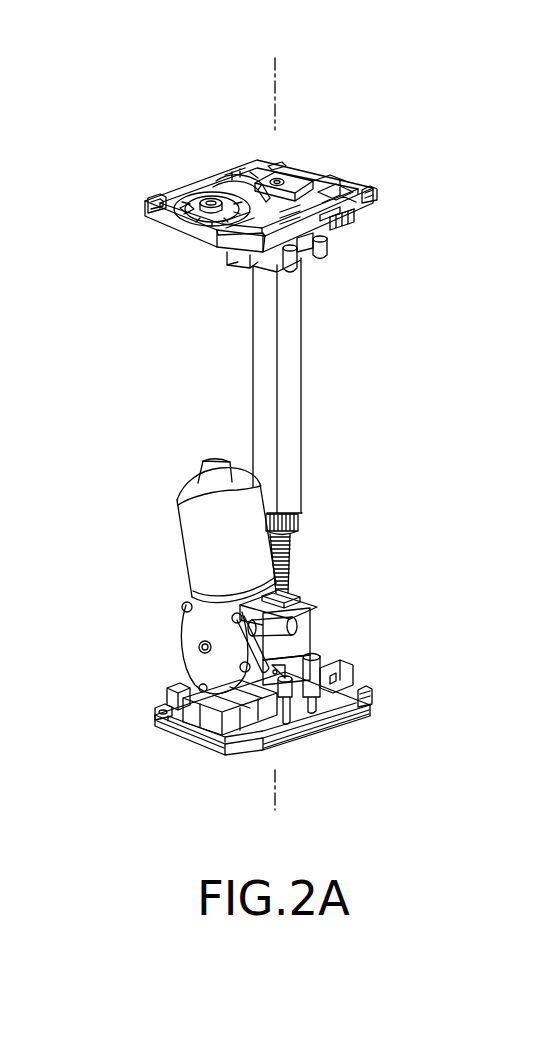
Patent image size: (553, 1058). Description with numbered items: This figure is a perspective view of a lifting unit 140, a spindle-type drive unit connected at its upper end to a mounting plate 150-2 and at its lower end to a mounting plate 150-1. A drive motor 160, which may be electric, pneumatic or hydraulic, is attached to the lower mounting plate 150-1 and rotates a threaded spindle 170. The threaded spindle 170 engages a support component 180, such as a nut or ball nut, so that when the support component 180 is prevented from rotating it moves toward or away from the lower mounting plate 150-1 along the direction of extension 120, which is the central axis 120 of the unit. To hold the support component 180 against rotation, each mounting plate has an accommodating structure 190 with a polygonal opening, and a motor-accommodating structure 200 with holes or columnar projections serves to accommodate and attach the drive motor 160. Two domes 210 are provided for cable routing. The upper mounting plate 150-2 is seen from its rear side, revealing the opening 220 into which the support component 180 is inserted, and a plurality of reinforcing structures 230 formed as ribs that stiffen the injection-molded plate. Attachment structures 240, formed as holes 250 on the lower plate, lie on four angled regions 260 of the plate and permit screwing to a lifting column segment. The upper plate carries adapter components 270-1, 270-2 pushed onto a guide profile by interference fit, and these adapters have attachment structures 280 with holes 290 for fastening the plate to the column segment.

The direction of extension 120 is at (272, 83).
The lifting unit 140 is at (339, 385).
The lower mounting plate 150-1 is at (348, 717).
The upper mounting plate 150-2 is at (352, 176).
The drive motor 160 is at (165, 629).
The threaded spindle 170 is at (288, 547).
The support component 180 is at (313, 397).
The accommodating structure 190 is at (278, 174).
The motor-accommodating structure 200 is at (204, 196).
The domes 210 is at (288, 275).
The opening 220 is at (273, 165).
The reinforcing structures 230 is at (183, 208).
The attachment structures 240 is at (370, 690).
The holes 250 is at (364, 690).
The angled regions 260 is at (377, 705).
The first adapter component 270-1 is at (367, 212).
The second adapter component 270-2 is at (203, 244).
The attachment structures of adapter components 280 is at (378, 189).
The holes of adapter components 290 is at (143, 205).